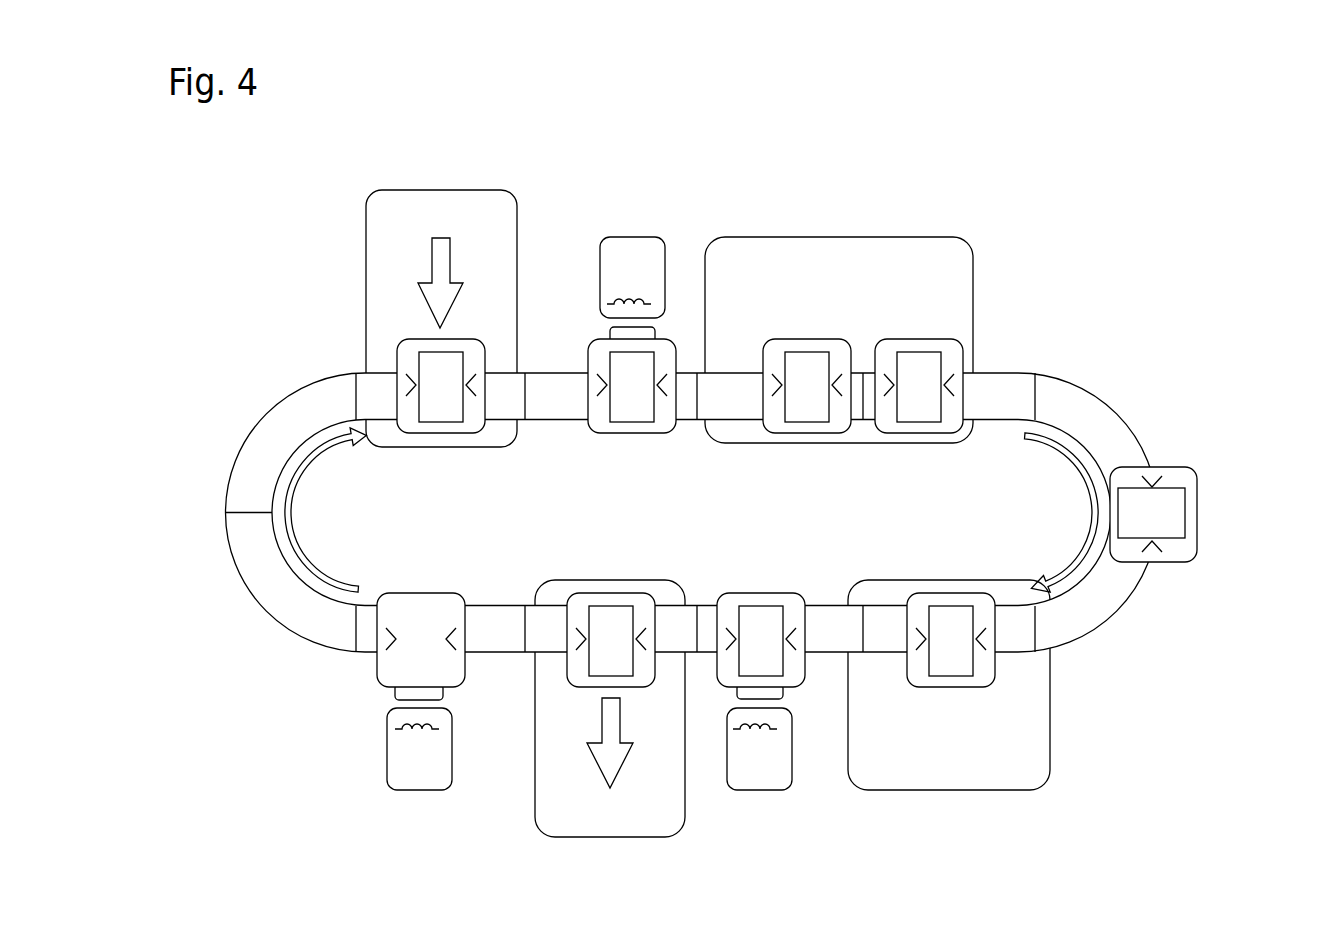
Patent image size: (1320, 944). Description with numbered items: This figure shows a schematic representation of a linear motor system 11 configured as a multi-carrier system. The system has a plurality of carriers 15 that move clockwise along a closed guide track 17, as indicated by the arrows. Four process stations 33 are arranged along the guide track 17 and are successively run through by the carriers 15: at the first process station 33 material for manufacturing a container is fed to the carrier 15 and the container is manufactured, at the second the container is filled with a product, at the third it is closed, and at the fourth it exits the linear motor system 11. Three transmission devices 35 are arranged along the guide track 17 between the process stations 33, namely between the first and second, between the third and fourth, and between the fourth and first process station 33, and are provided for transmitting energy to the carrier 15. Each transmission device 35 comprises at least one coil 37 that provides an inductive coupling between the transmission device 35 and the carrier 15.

The linear motor system 11 is at (757, 449).
The carrier 15 is at (1172, 478).
The guide track 17 is at (1093, 397).
The process station 33 is at (376, 302).
The transmission device 35 is at (608, 258).
The coil 37 is at (392, 722).